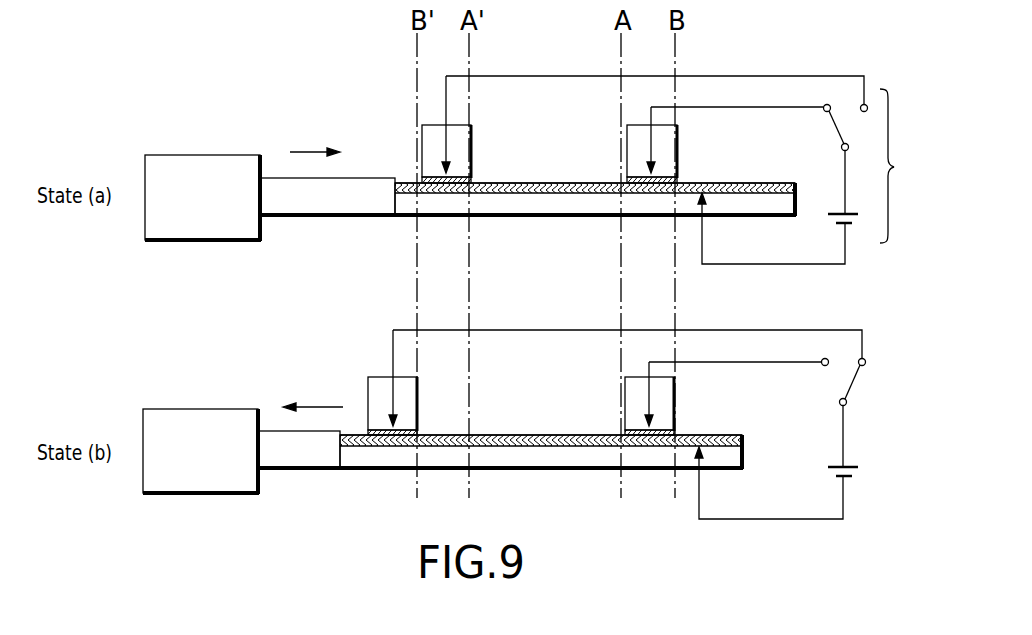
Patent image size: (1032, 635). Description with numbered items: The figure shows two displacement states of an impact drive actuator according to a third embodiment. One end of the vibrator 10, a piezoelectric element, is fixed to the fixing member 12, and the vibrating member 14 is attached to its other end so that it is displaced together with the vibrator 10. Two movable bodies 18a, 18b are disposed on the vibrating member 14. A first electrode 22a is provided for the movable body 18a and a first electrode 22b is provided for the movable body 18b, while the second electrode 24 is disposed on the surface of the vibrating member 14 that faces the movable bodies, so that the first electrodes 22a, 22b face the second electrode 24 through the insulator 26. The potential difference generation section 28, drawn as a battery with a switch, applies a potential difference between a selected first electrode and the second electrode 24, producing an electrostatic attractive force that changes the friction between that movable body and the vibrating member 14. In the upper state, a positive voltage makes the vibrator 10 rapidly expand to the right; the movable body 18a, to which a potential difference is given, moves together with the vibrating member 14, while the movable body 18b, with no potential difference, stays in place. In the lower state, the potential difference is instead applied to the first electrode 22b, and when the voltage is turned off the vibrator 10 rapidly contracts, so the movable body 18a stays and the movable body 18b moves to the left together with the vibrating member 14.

The vibrator 10 is at (279, 177).
The fixing member 12 is at (196, 155).
The vibrating member 14 is at (347, 217).
The movable body 18a is at (628, 137).
The movable body 18b is at (423, 137).
The first electrode 22a is at (628, 180).
The first electrode 22b is at (423, 180).
The second electrode 24 is at (513, 194).
The insulator 26 is at (784, 181).
The potential difference generation section 28 is at (657, 297).